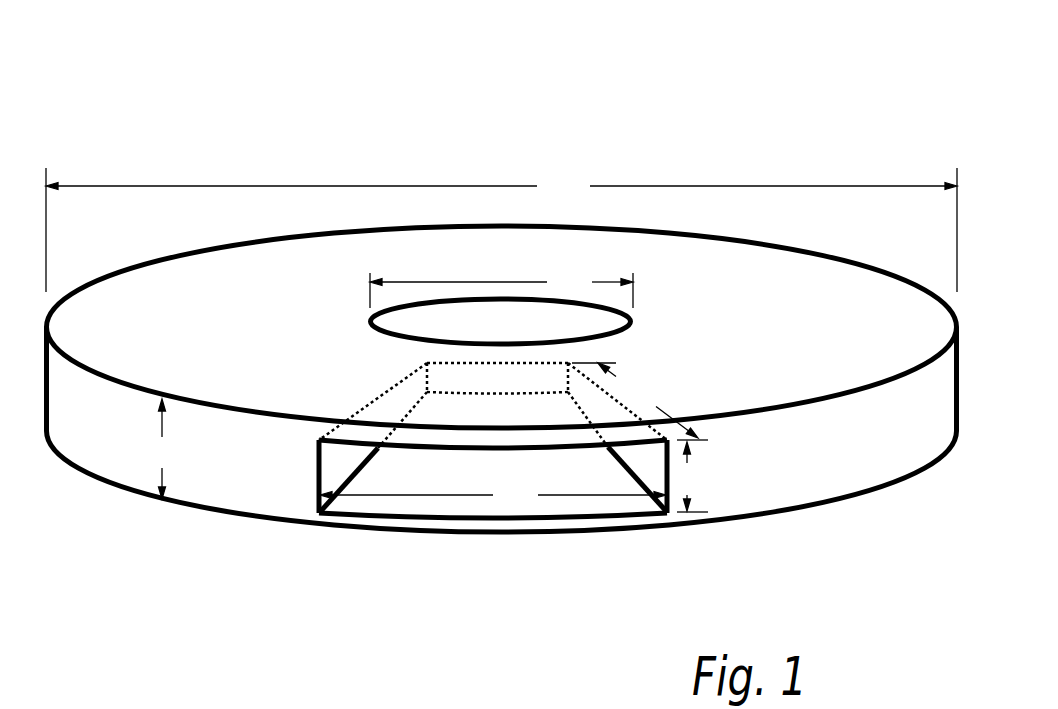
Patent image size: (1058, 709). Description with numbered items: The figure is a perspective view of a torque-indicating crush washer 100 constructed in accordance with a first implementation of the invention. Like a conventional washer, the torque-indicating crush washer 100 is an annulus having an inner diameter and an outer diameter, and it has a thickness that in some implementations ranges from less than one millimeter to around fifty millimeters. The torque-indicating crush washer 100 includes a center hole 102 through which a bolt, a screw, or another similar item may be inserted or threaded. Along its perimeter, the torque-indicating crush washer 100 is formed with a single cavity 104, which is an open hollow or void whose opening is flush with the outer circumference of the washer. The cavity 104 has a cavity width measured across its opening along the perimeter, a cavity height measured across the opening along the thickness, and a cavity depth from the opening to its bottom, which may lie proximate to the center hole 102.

The torque-indicating crush washer 100 is at (325, 133).
The center hole 102 is at (387, 337).
The cavity 104 is at (305, 459).